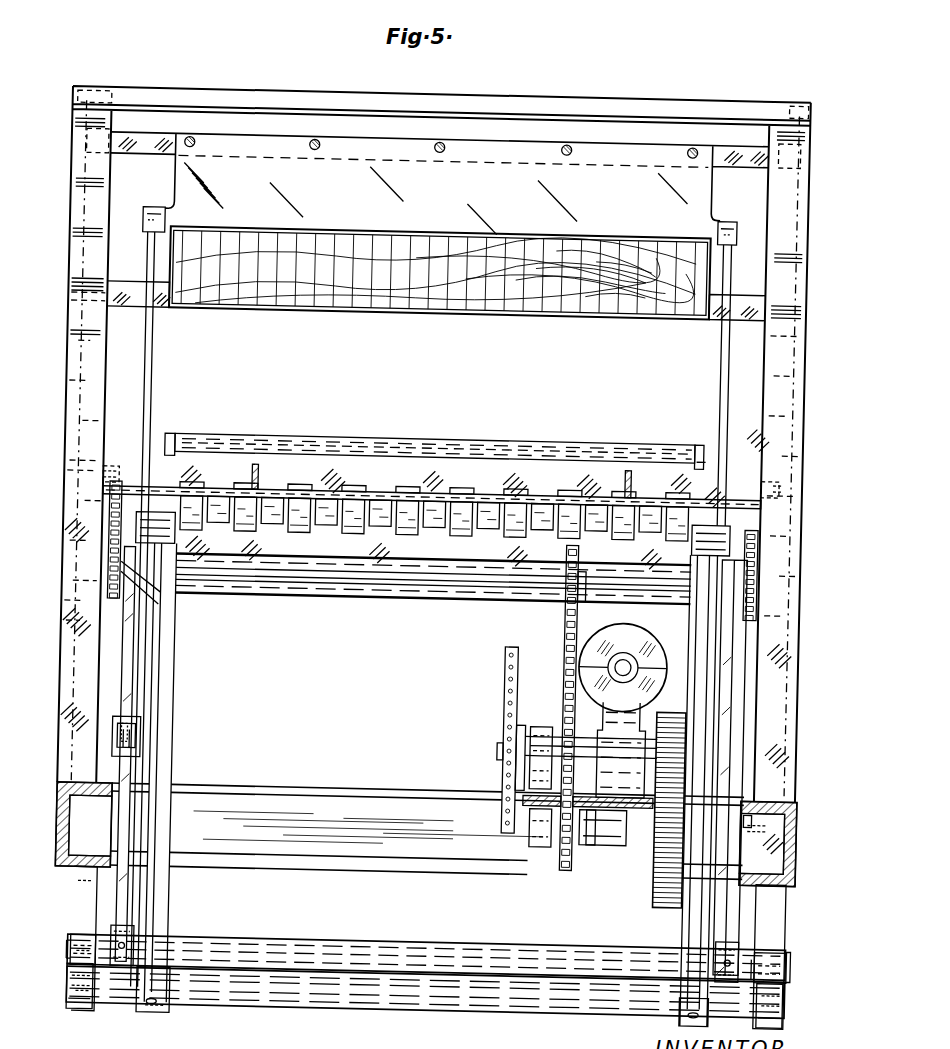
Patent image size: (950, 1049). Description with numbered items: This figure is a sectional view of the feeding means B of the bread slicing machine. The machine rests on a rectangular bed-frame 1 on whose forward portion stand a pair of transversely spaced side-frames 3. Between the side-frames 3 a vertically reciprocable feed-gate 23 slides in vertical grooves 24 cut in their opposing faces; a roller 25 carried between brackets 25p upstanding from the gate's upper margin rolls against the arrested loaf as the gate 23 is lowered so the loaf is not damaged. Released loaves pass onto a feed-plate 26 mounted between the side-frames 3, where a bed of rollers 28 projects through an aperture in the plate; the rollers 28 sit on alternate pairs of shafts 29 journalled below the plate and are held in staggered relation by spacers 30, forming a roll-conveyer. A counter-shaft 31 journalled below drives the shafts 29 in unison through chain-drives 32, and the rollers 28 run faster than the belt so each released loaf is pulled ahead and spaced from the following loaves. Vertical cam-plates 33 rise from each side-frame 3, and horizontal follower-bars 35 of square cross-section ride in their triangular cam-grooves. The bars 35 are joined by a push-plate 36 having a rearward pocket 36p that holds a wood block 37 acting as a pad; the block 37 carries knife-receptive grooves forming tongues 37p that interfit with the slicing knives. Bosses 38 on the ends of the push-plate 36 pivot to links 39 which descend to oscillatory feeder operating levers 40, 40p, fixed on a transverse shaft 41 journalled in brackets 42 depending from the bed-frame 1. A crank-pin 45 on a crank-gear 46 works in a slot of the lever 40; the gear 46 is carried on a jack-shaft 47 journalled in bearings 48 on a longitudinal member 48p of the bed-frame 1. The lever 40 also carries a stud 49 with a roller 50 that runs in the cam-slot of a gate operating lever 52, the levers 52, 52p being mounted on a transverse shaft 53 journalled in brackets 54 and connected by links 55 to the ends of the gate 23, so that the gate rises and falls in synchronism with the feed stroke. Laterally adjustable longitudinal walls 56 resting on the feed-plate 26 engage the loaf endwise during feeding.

The bed-frame 1 is at (88, 820).
The side-frames 3 is at (100, 625).
The feed-gate 23 is at (750, 430).
The vertical grooves 24 is at (816, 472).
The roller 25 is at (598, 430).
The brackets 25p is at (180, 430).
The feed-plate 26 is at (356, 466).
The rollers 28 is at (505, 470).
The shafts 29 is at (298, 544).
The spacers 30 is at (422, 544).
The counter-shaft 31 is at (360, 596).
The chain-drives 32 is at (172, 592).
The cam-plates 33 is at (108, 352).
The follower-bars 35 is at (744, 238).
The push-plate 36 is at (439, 186).
The pocket 36p is at (338, 300).
The wood block 37 is at (436, 300).
The tongues 37p is at (530, 300).
The bosses 38 is at (162, 204).
The links 39 is at (158, 356).
The feeder operating lever 40 is at (700, 930).
The feeder operating lever 40p is at (187, 740).
The transverse shaft 41 is at (400, 1003).
The brackets 42 is at (100, 1008).
The crank-pin 45 is at (622, 711).
The crank-gear 46 is at (672, 886).
The jack-shaft 47 is at (590, 845).
The bearings 48 is at (546, 840).
The longitudinal member 48p is at (610, 835).
The stud 49 is at (815, 808).
The roller 50 is at (770, 788).
The gate operating lever 52 is at (758, 918).
The gate operating lever 52p is at (130, 905).
The transverse shaft 53 is at (386, 936).
The brackets 54 is at (90, 940).
The links 55 is at (146, 666).
The longitudinal walls 56 is at (265, 458).
The feeding means B is at (811, 155).